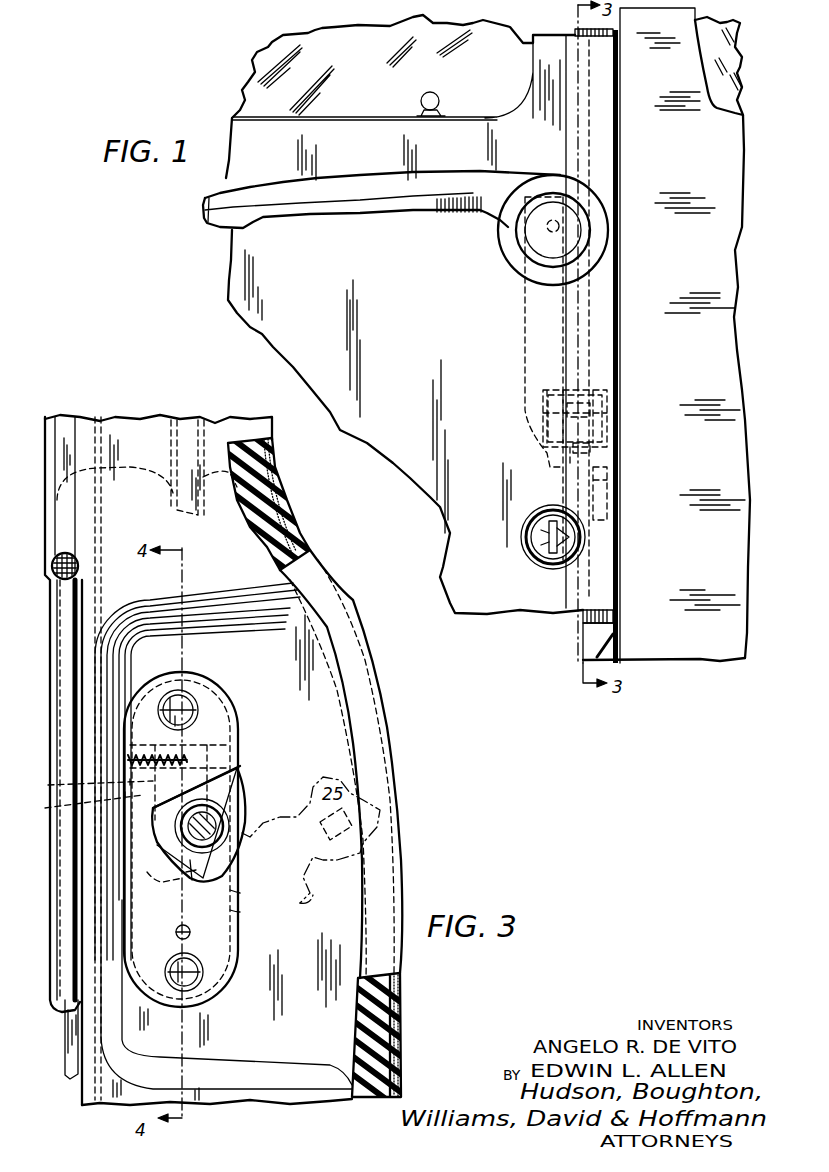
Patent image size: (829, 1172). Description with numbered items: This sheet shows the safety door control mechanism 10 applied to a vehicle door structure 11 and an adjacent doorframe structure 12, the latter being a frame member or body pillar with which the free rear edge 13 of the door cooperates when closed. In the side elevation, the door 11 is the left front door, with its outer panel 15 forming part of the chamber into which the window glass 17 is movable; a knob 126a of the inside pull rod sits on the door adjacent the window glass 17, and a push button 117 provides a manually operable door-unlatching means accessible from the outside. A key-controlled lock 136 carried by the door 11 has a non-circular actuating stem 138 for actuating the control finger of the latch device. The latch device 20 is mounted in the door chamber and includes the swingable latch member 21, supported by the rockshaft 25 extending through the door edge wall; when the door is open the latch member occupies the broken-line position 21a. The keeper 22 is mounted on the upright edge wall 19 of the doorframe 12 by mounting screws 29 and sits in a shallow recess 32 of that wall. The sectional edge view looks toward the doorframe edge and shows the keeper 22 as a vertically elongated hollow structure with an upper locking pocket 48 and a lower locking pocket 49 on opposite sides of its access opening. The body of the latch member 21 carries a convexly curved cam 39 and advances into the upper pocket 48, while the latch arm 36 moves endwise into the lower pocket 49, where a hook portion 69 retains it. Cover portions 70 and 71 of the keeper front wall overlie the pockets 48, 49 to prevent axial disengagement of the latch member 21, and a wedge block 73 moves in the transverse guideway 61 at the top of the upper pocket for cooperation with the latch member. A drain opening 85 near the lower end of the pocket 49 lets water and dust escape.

In FIG. 1, the door control mechanism 10 is at (562, 375).
In FIG. 1, the door structure 11 is at (342, 117).
In FIG. 1, the doorframe structure 12 is at (707, 21).
In FIG. 3, the doorframe structure 12 is at (381, 685).
In FIG. 1, the rear edge of the door 13 is at (612, 172).
In FIG. 1, the outer panel 15 is at (410, 476).
In FIG. 1, the window glass 17 is at (497, 44).
In FIG. 3, the edge wall 19 is at (288, 538).
In FIG. 1, the latch device 20 is at (524, 358).
In FIG. 1, the latch member 21 is at (600, 508).
In FIG. 3, the latch member 21 is at (230, 870).
In FIG. 3, the initial broken-line position of the latch member 21a is at (325, 904).
In FIG. 1, the keeper 22 is at (612, 279).
In FIG. 3, the keeper 22 is at (238, 712).
In FIG. 1, the rockshaft 25 is at (600, 426).
In FIG. 3, the rockshaft 25 is at (220, 816).
In FIG. 3, the mounting screws 29 is at (185, 703).
In FIG. 3, the shallow recess 32 is at (196, 645).
In FIG. 3, the latch arm 36 is at (230, 890).
In FIG. 3, the cam 39 is at (232, 790).
In FIG. 3, the upper locking pocket 48 is at (85, 786).
In FIG. 3, the lower locking pocket 49 is at (160, 867).
In FIG. 3, the transverse guideway 61 is at (233, 726).
In FIG. 3, the hook portion 69 is at (230, 910).
In FIG. 3, the cover portion 70 is at (198, 825).
In FIG. 3, the cover portion 71 is at (201, 874).
In FIG. 3, the wedge block 73 is at (79, 805).
In FIG. 3, the drain opening 85 is at (176, 932).
In FIG. 1, the push button 117 is at (537, 246).
In FIG. 1, the knob 126a is at (434, 93).
In FIG. 1, the key-controlled lock 136 is at (549, 556).
In FIG. 1, the actuating stem 138 is at (548, 520).